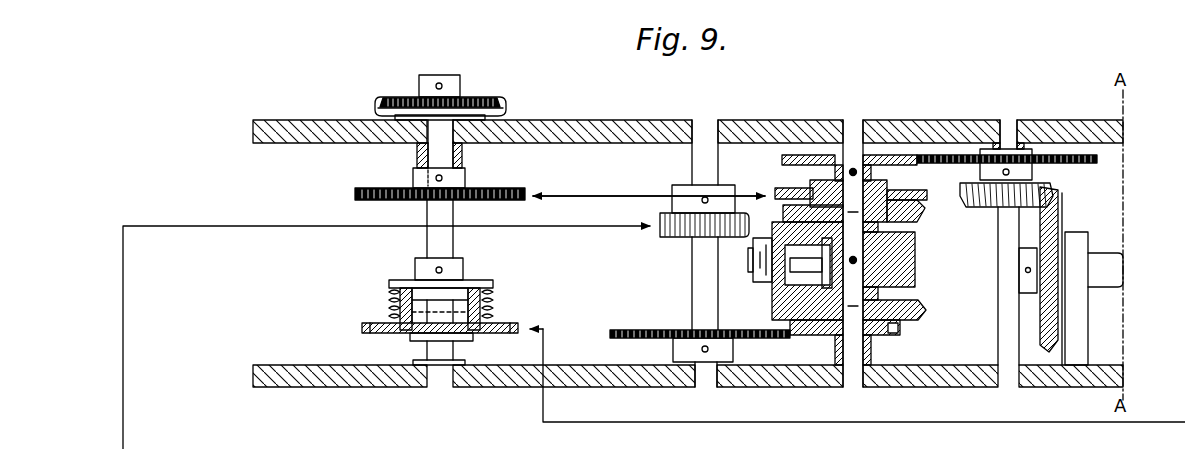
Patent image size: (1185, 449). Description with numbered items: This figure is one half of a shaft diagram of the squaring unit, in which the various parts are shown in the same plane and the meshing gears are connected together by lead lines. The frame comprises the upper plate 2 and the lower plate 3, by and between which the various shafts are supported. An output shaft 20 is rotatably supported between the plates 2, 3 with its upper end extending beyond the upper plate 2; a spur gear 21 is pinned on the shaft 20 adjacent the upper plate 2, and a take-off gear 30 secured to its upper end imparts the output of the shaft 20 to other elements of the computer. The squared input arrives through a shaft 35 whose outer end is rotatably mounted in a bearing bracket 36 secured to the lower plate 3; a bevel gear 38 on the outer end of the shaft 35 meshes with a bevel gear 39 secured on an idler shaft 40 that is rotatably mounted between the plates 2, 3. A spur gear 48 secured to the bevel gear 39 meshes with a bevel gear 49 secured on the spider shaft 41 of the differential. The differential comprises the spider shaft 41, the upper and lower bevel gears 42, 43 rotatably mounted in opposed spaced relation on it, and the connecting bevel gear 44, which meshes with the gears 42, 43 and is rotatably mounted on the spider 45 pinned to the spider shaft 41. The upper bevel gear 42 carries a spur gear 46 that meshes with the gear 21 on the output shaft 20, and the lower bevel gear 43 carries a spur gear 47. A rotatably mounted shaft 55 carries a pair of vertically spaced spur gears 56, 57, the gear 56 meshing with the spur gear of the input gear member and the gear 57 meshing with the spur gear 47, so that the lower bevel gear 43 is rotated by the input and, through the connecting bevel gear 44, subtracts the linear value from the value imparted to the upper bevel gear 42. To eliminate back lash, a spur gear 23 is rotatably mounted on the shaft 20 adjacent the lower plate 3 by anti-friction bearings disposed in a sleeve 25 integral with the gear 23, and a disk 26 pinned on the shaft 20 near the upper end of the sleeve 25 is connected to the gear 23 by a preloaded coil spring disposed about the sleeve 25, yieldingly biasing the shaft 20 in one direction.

The upper plate 2 is at (262, 120).
The lower plate 3 is at (268, 365).
The output shaft 20 is at (427, 237).
The spur gear 21 is at (355, 194).
The spur gear 23 is at (362, 330).
The sleeve 25 is at (493, 290).
The disk 26 is at (389, 283).
The take-off gear 30 is at (388, 100).
The shaft 35 is at (1105, 287).
The bearing bracket 36 is at (1088, 325).
The bevel gear 38 is at (1062, 204).
The bevel gear 39 is at (978, 207).
The idler shaft 40 is at (1008, 120).
The spider shaft 41 is at (858, 120).
The upper bevel gear 42 is at (918, 210).
The lower bevel gear 43 is at (920, 308).
The connecting bevel gear 44 is at (772, 306).
The spider 45 is at (915, 260).
The spur gear 46 is at (900, 192).
The spur gear 47 is at (900, 328).
The spur gear 48 is at (1097, 159).
The bevel gear 49 is at (812, 155).
The shaft 55 is at (692, 161).
The spur gear 56 is at (660, 235).
The spur gear 57 is at (625, 330).